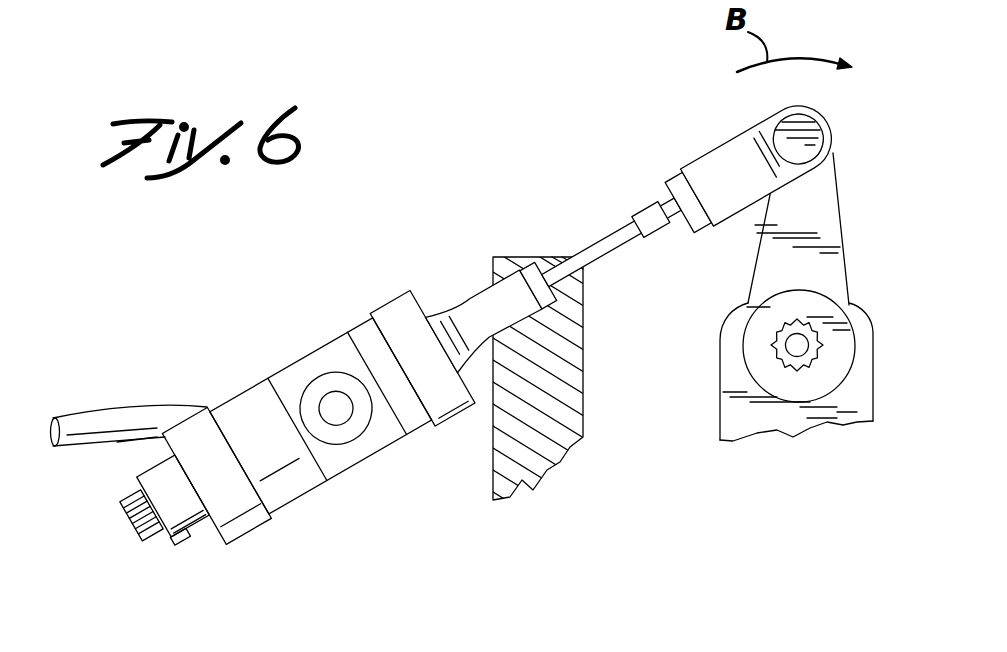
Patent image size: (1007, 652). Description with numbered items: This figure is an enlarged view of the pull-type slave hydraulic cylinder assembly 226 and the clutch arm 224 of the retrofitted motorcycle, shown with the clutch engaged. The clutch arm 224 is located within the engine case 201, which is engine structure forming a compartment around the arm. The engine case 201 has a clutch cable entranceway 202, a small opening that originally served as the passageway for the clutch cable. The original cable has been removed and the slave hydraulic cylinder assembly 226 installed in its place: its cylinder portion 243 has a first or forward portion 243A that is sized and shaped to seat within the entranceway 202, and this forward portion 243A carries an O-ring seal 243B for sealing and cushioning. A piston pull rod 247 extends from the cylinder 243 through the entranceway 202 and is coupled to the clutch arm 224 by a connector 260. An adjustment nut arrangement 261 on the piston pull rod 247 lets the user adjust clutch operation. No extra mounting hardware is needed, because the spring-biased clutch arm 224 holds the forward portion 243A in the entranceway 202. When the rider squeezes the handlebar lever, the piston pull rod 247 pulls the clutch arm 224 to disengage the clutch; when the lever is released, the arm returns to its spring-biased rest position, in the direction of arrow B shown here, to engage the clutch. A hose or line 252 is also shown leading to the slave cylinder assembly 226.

The engine case 201 is at (493, 493).
The clutch cable entranceway 202 is at (584, 244).
The clutch arm 224 is at (762, 254).
The slave hydraulic cylinder assembly 226 is at (256, 548).
The cylinder portion 243 is at (390, 315).
The forward portion 243A is at (500, 297).
The O-ring seal 243B is at (516, 280).
The piston pull rod 247 is at (628, 247).
The supply tube 252 is at (123, 413).
The connector 260 is at (722, 160).
The adjustment nut arrangement 261 is at (675, 186).